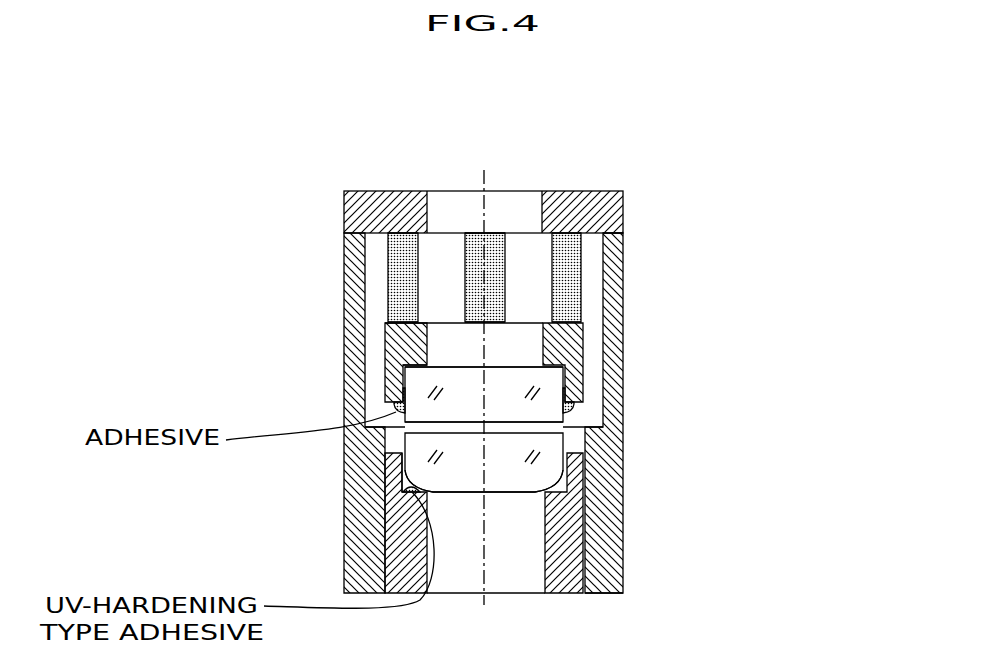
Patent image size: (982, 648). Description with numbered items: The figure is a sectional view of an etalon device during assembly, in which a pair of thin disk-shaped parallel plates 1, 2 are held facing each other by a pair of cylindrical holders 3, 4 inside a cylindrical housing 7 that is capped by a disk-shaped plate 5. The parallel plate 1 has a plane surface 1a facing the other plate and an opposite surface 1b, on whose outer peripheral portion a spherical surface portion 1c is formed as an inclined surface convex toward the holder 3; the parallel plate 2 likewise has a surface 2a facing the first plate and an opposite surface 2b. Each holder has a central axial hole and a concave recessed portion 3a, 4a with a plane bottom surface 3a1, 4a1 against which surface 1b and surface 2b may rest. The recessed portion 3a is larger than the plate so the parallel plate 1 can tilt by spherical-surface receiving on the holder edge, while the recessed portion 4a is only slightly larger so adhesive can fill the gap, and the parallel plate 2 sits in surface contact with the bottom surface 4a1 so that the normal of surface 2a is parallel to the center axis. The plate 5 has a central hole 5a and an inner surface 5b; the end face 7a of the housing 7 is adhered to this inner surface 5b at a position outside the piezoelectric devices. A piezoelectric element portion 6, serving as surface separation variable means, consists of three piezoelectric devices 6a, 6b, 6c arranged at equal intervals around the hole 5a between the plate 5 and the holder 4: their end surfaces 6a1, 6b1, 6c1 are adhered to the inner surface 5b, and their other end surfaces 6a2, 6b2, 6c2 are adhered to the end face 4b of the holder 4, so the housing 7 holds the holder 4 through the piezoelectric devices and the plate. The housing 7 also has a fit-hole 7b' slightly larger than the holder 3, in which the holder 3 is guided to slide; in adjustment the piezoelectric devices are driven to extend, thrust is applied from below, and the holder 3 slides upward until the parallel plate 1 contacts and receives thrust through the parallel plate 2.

The parallel plate 1 is at (565, 452).
The surface 1a is at (405, 440).
The surface 1b is at (586, 500).
The spherical surface portion 1c is at (553, 472).
The parallel plate 2 is at (556, 386).
The surface 2a is at (563, 426).
The surface 2b is at (576, 346).
The holder 3 is at (392, 564).
The recessed portion 3a is at (406, 492).
The bottom surface 3a1 is at (412, 547).
The holder 4 is at (387, 348).
The recessed portion 4a is at (396, 398).
The bottom surface 4a1 is at (402, 368).
The end face 4b is at (388, 332).
The plate 5 is at (624, 203).
The hole 5a is at (521, 228).
The inner surface 5b is at (347, 243).
The piezoelectric element portion 6 is at (540, 95).
The piezoelectric device 6a is at (530, 205).
The end surface 6a1 is at (578, 234).
The end surface 6a2 is at (572, 325).
The piezoelectric device 6b is at (475, 242).
The end surface 6b1 is at (490, 232).
The end surface 6b2 is at (507, 322).
The piezoelectric device 6c is at (414, 225).
The end surface 6c1 is at (400, 232).
The end surface 6c2 is at (418, 322).
The housing 7 is at (600, 550).
The end face 7a is at (624, 234).
The fit-hole 7b' is at (656, 597).